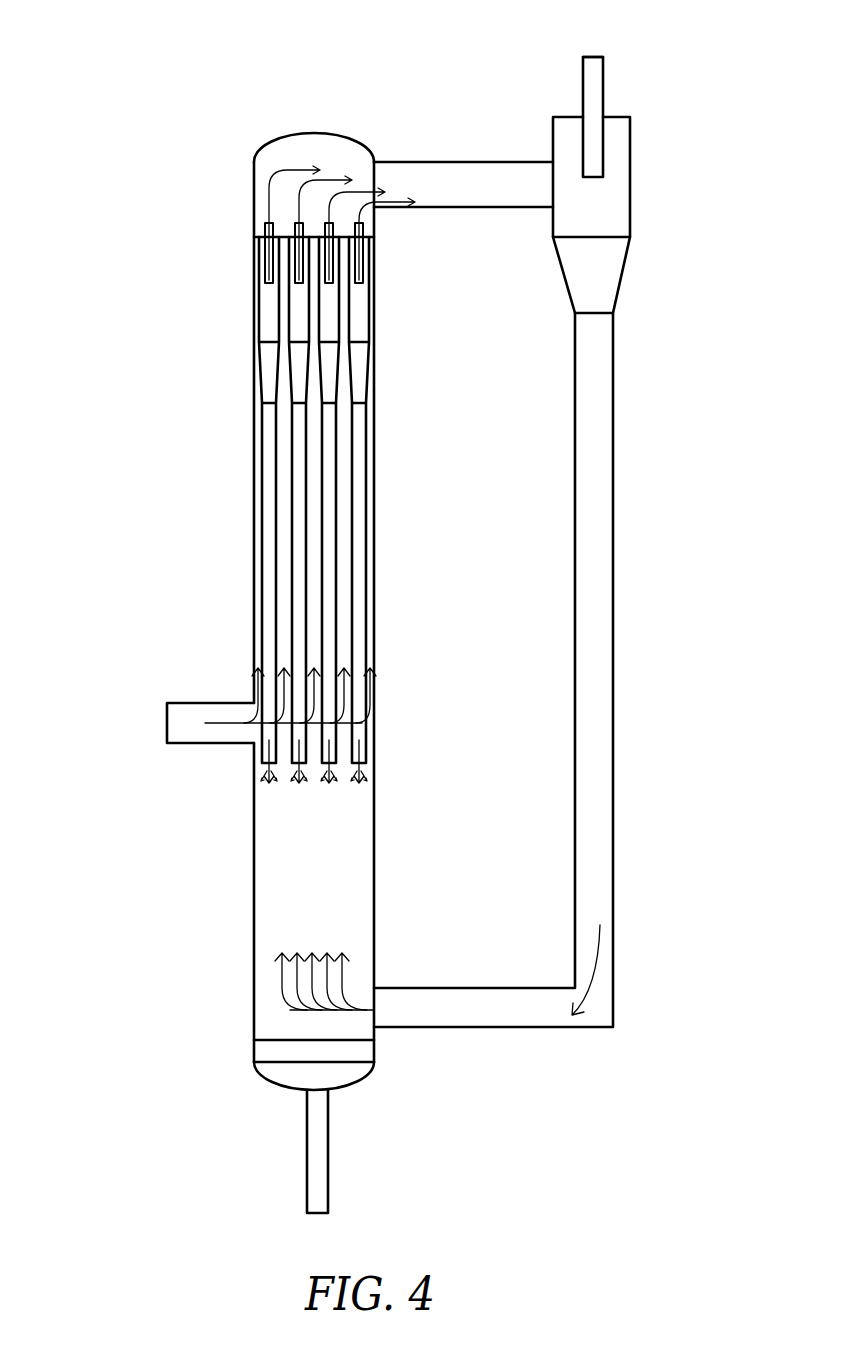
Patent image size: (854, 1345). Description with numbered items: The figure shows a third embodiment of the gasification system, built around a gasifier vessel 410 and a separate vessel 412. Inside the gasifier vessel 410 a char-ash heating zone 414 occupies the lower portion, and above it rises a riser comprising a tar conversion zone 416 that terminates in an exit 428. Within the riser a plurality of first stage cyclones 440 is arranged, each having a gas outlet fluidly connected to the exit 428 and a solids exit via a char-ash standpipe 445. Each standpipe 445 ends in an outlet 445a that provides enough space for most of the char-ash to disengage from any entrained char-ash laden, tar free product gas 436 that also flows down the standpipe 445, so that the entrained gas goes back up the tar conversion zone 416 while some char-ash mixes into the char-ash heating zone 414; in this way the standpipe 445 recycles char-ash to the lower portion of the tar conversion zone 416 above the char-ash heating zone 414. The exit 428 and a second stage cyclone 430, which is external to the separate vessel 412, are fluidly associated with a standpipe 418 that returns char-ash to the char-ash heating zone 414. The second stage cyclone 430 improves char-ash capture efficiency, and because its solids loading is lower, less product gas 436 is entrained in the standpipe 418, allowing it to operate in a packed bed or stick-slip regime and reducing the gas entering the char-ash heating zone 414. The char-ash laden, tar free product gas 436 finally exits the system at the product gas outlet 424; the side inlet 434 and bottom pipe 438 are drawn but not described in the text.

The gasifier vessel 410 is at (188, 735).
The separate vessel 412 is at (290, 133).
The char-ash heating zone 414 is at (280, 880).
The tar conversion zone 416 is at (258, 515).
The standpipe 418 is at (595, 485).
The product gas outlet 424 is at (592, 57).
The exit 428 is at (372, 178).
The second stage cyclone 430 is at (590, 207).
The feed inlet 434 is at (193, 718).
The char-ash laden, tar free product gas 436 is at (592, 75).
The bottom outlet pipe 438 is at (323, 1138).
The first stage cyclone 440 is at (258, 297).
The char-ash standpipe 445 is at (262, 448).
The outlet 445a is at (366, 766).